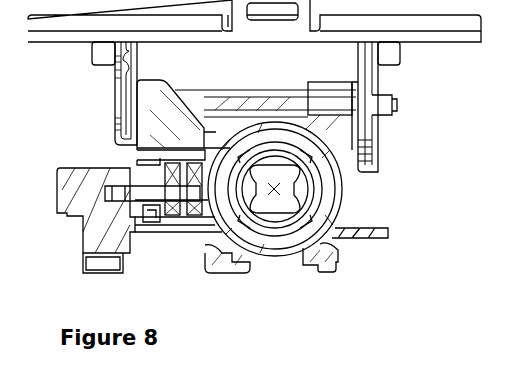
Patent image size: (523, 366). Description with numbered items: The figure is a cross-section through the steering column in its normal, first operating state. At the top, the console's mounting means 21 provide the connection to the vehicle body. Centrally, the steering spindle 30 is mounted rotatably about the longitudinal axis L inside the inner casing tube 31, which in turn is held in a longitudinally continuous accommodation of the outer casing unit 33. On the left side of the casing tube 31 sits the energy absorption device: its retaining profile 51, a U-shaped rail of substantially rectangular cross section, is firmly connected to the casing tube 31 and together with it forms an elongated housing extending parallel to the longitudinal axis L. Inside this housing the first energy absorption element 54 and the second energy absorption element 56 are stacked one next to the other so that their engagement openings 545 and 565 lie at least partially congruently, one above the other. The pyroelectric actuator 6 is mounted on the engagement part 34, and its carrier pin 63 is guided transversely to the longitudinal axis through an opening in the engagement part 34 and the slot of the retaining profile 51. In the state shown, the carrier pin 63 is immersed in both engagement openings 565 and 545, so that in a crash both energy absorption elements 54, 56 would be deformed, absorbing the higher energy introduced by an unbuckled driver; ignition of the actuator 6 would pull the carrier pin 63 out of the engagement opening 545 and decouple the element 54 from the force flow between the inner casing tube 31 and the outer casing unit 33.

The mounting means 21 is at (443, 36).
The retaining profile 51 is at (128, 140).
The engagement part 34 is at (142, 157).
The engagement opening 565 is at (158, 182).
The inner casing tube 31 is at (346, 188).
The outer casing unit 33 is at (338, 218).
The steering spindle 30 is at (326, 233).
The pyroelectric actuator 6 is at (88, 195).
The carrier pin 63 is at (153, 218).
The second energy absorption element 56 is at (177, 212).
The first energy absorption element 54 is at (194, 212).
The engagement opening 545 is at (236, 240).
The longitudinal axis L is at (272, 185).